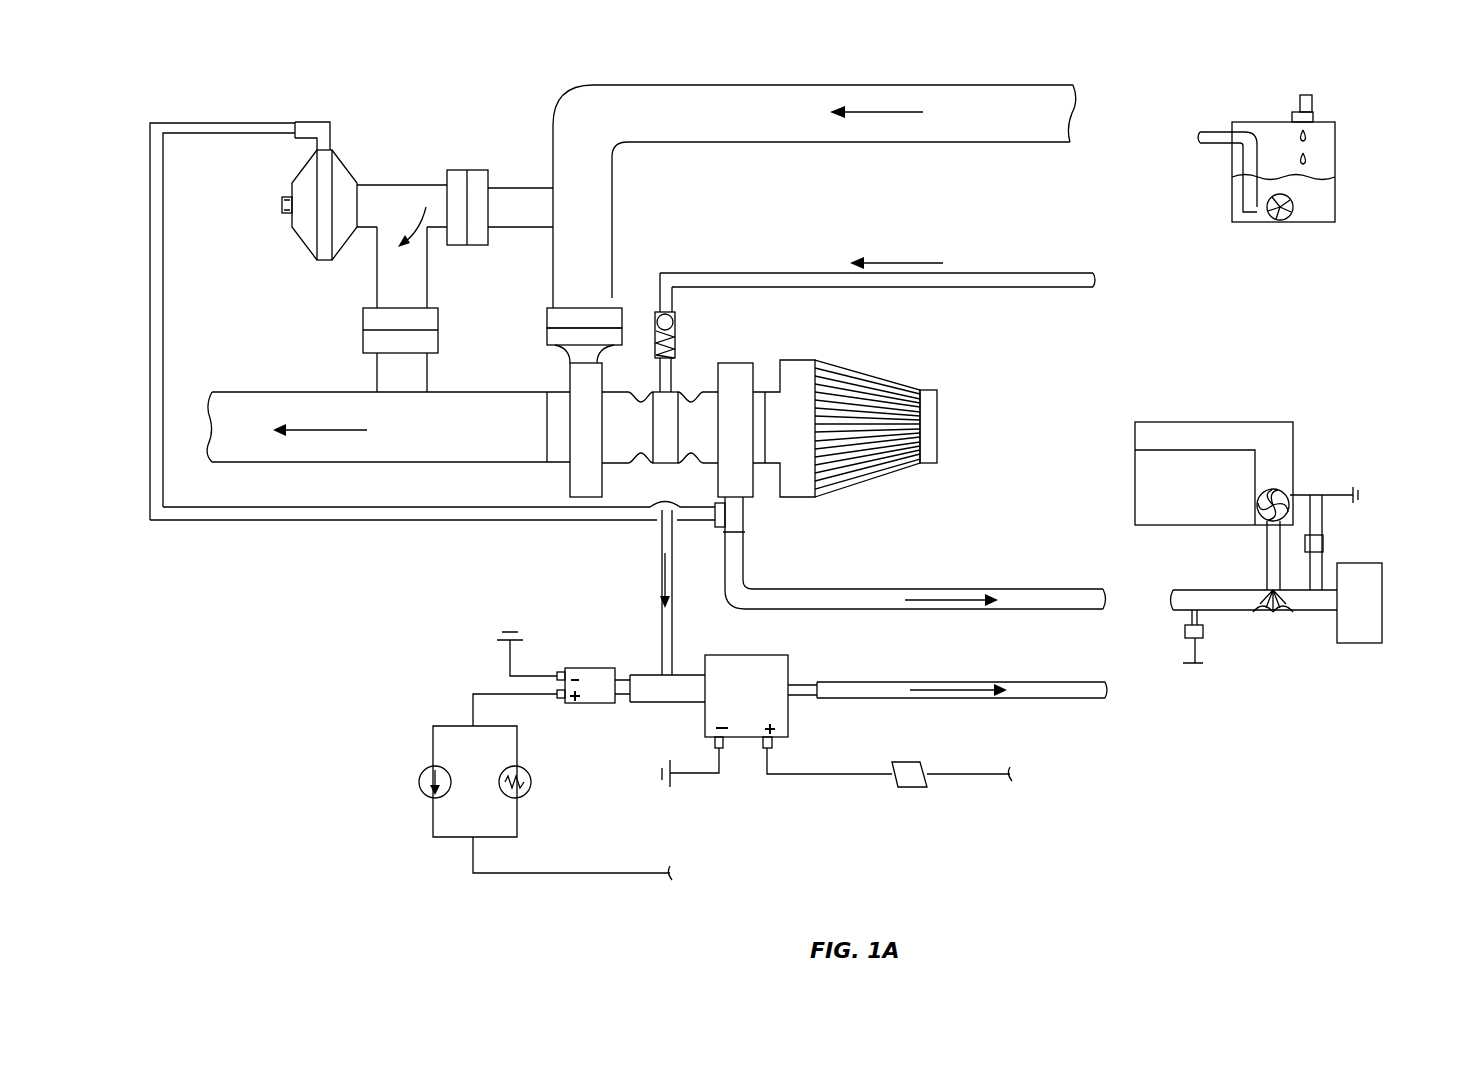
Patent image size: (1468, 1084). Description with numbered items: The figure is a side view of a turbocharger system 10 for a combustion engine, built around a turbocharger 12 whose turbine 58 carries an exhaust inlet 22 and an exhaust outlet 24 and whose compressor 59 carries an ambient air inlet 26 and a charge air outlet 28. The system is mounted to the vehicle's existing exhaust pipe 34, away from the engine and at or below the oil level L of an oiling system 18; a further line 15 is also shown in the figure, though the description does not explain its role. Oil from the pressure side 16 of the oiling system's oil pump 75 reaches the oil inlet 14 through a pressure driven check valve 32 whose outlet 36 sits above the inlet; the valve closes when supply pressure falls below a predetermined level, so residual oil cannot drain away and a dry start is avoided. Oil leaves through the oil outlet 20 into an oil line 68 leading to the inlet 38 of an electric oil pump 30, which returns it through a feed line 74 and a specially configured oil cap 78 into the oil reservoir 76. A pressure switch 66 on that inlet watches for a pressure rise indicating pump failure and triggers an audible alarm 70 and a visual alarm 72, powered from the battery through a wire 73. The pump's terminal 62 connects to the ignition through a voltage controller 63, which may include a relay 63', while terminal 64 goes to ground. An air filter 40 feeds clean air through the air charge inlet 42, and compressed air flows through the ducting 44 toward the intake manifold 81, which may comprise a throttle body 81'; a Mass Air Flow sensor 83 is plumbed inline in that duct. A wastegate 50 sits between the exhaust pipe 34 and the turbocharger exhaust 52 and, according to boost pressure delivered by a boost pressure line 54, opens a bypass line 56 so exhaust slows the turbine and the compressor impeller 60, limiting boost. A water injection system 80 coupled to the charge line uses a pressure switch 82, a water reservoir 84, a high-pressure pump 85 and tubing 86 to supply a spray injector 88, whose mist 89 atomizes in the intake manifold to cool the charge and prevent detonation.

The turbocharger system 10 is at (1100, 363).
The turbocharger 12 is at (742, 355).
The oil inlet 14 is at (677, 388).
The fuel supply line 15 is at (877, 256).
The pressure side 16 is at (1208, 145).
The oiling system 18 is at (1260, 120).
The oil outlet 20 is at (653, 473).
The exhaust inlet 22 is at (560, 352).
The exhaust outlet 24 is at (568, 462).
The ambient air inlet 26 is at (760, 388).
The charge air outlet 28 is at (748, 497).
The oil pump 30 is at (788, 668).
The pressure driven check valve 32 is at (653, 317).
The exhaust pipe 34 is at (758, 143).
The outlet of the check valve 36 is at (655, 363).
The inlet of the oil pump 38 is at (677, 675).
The air filter 40 is at (863, 480).
The air charge inlet 42 is at (767, 438).
The ducting 44 is at (948, 590).
The wastegate 50 is at (348, 172).
The exhaust 52 is at (317, 463).
The boost pressure line 54 is at (150, 375).
The line 56 is at (417, 184).
The turbine 58 is at (582, 418).
The compressor 59 is at (740, 422).
The compressor impeller 60 is at (677, 507).
The terminal 62 is at (813, 775).
The voltage controller 63 is at (927, 810).
The relay 63' is at (974, 750).
The terminal 64 is at (697, 777).
The pressure switch 66 is at (597, 668).
The oil line 68 is at (673, 548).
The audible alarm 70 is at (420, 788).
The visual alarm 72 is at (535, 772).
The wire 73 is at (588, 875).
The feed line 74 is at (860, 697).
The oil pump 75 is at (1283, 220).
The oil reservoir 76 is at (1230, 200).
The oil cap 78 is at (1313, 113).
The water injection system 80 is at (1295, 433).
The intake manifold 81 is at (1277, 640).
The throttle body 81' is at (1422, 592).
The pressure switch 82 is at (1325, 543).
The Mass Air Flow sensor 83 is at (1183, 630).
The water reservoir 84 is at (1153, 488).
The high-pressure pump 85 is at (1287, 493).
The tubing 86 is at (1263, 543).
The spray injector 88 is at (1260, 613).
The mist 89 is at (1297, 613).
The oil level L is at (1315, 177).